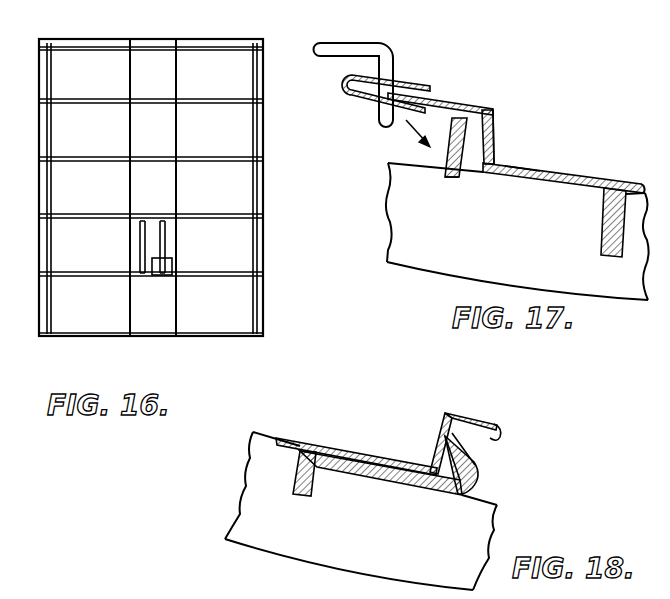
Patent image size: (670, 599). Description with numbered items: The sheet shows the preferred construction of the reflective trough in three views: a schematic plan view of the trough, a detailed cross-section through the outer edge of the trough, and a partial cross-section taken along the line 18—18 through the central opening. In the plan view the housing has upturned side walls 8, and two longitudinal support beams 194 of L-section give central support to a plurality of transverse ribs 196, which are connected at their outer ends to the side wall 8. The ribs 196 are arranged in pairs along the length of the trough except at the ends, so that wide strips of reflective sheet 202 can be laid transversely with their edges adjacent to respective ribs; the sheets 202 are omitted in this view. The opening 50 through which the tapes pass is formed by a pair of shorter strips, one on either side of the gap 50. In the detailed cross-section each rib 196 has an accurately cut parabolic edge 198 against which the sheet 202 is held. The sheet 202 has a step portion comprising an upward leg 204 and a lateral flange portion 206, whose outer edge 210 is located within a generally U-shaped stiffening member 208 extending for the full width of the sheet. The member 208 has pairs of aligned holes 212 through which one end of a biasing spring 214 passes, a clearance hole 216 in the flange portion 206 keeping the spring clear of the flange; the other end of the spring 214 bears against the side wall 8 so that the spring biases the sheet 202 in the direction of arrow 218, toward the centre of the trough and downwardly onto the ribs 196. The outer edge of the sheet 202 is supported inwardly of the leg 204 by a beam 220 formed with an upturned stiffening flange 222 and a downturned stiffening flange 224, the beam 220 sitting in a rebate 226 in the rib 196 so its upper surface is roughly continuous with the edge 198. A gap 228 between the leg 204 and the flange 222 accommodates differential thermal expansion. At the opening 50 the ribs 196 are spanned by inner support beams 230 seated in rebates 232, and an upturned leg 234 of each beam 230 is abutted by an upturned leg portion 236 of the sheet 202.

In FIG. 16, the side walls 8 is at (265, 243).
In FIG. 16, the section line 18— 18 is at (151, 287).
In FIG. 16, the opening 50 is at (152, 220).
In FIG. 18, the opening 50 is at (532, 465).
In FIG. 16, the support beams 194 is at (128, 316).
In FIG. 16, the ribs 196 is at (233, 92).
In FIG. 17, the ribs 196 is at (417, 252).
In FIG. 18, the ribs 196 is at (257, 467).
In FIG. 17, the concave edge 198 is at (648, 191).
In FIG. 17, the sheets 202 is at (577, 175).
In FIG. 18, the sheets 202 is at (342, 445).
In FIG. 17, the upward leg 204 is at (494, 141).
In FIG. 17, the lateral flange portion 206 is at (487, 106).
In FIG. 17, the stiffening member 208 is at (429, 89).
In FIG. 17, the outer edge 210 is at (365, 82).
In FIG. 17, the aligned holes 212 is at (400, 80).
In FIG. 17, the biasing springs 214 is at (378, 53).
In FIG. 17, the clearance hole 216 is at (376, 98).
In FIG. 17, the arrow 218 is at (408, 124).
In FIG. 16, the beams 220 is at (52, 120).
In FIG. 17, the beams 220 is at (525, 182).
In FIG. 17, the upturned stiffening flange 222 is at (455, 149).
In FIG. 17, the downturned stiffening flange 224 is at (605, 234).
In FIG. 17, the rebates 226 is at (390, 204).
In FIG. 17, the gap 228 is at (470, 137).
In FIG. 18, the inner support beams 230 is at (372, 478).
In FIG. 18, the rebates 232 is at (492, 497).
In FIG. 18, the upturned legs 234 is at (464, 443).
In FIG. 18, the upturned leg portion 236 is at (441, 427).